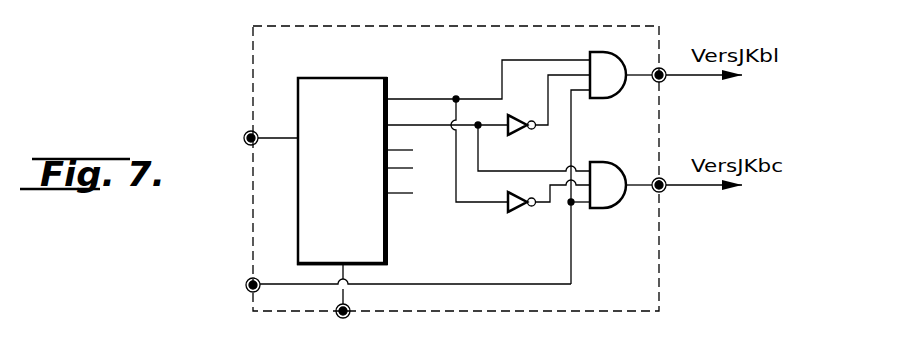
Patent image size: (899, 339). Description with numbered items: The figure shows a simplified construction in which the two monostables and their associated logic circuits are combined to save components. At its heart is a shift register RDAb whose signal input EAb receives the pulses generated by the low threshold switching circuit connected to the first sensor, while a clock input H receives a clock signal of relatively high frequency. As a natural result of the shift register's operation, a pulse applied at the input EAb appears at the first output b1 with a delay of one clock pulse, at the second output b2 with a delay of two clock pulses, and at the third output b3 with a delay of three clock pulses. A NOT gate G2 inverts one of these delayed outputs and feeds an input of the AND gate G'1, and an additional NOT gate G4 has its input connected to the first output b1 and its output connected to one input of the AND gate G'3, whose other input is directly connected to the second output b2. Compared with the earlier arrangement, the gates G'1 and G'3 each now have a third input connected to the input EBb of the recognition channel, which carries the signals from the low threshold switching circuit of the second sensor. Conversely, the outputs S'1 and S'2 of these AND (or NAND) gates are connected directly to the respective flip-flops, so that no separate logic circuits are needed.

The shift register RDAb is at (378, 186).
The input EAb is at (244, 138).
The input EBb is at (384, 285).
The clock input H is at (349, 291).
The shift register output b1 is at (489, 131).
The shift register output b2 is at (489, 139).
The shift register output b3 is at (402, 141).
The NOT gate G2 is at (549, 119).
The NOT gate G4 is at (549, 210).
The AND gate G'1 is at (619, 66).
The output S'1 is at (646, 85).
The AND gate G'3 is at (609, 209).
The output S'2 is at (646, 198).